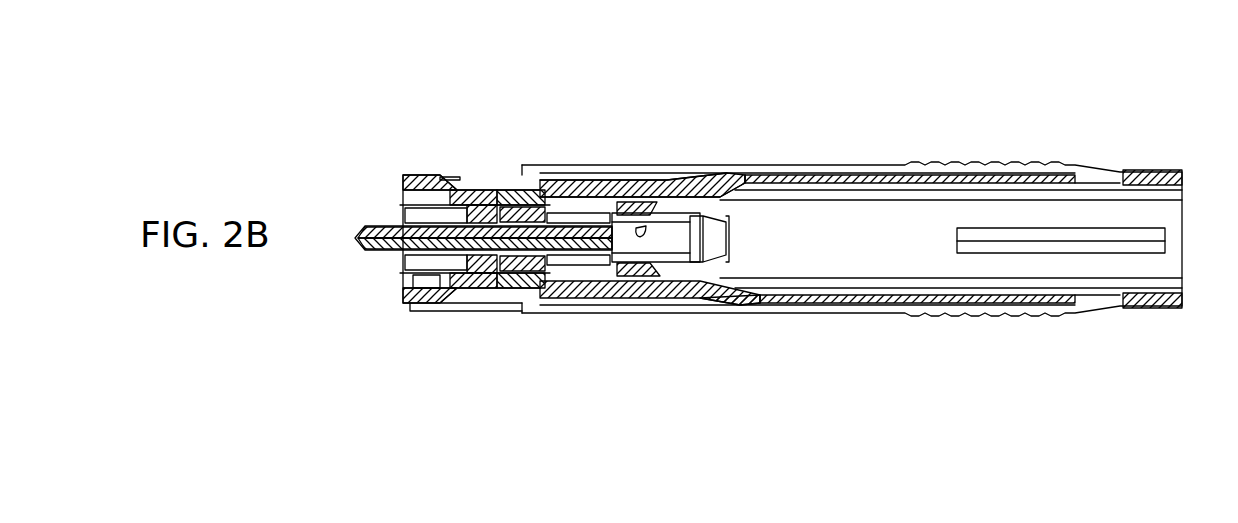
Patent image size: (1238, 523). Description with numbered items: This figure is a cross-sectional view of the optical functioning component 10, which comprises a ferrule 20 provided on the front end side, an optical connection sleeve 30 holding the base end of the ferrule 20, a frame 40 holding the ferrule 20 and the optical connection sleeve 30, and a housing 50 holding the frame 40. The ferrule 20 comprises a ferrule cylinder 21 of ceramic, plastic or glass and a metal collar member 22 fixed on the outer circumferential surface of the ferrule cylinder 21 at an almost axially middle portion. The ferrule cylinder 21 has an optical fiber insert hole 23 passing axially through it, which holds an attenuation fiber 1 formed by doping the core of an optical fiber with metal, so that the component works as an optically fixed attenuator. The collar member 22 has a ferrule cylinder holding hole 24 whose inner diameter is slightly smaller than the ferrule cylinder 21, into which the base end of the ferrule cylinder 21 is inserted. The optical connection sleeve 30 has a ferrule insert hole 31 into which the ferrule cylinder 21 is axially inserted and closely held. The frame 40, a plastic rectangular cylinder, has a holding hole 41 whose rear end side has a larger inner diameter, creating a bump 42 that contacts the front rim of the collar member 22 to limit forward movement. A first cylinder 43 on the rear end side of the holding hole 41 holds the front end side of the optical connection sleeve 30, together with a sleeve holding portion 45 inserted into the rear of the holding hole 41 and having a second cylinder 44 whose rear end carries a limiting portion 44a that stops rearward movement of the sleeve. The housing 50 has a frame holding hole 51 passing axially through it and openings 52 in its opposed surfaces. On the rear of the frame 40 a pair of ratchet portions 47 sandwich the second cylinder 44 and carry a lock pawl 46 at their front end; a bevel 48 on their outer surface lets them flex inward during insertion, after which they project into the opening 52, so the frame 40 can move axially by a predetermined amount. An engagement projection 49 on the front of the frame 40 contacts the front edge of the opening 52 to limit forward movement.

The optical functioning component 10 is at (1047, 92).
The attenuation fiber 1 is at (384, 252).
The ferrule 20 is at (454, 372).
The ferrule cylinder 21 is at (412, 303).
The collar member 22 is at (463, 305).
The optical fiber insert hole 23 is at (370, 224).
The ferrule cylinder holding hole 24 is at (510, 175).
The optical connection sleeve 30 is at (603, 268).
The ferrule insert hole 31 is at (641, 230).
The frame 40 is at (500, 303).
The holding hole 41 is at (413, 175).
The bump 42 is at (482, 175).
The first cylinder 43 is at (570, 212).
The second cylinder 44 is at (668, 290).
The limiting portion 44a is at (716, 205).
The sleeve holding portion 45 is at (553, 300).
The lock pawl 46 is at (773, 290).
The ratchet portions 47 is at (720, 290).
The bevel 48 is at (641, 280).
The engagement projection 49 is at (450, 175).
The housing 50 is at (853, 175).
The frame holding hole 51 is at (907, 292).
The openings 52 is at (812, 182).